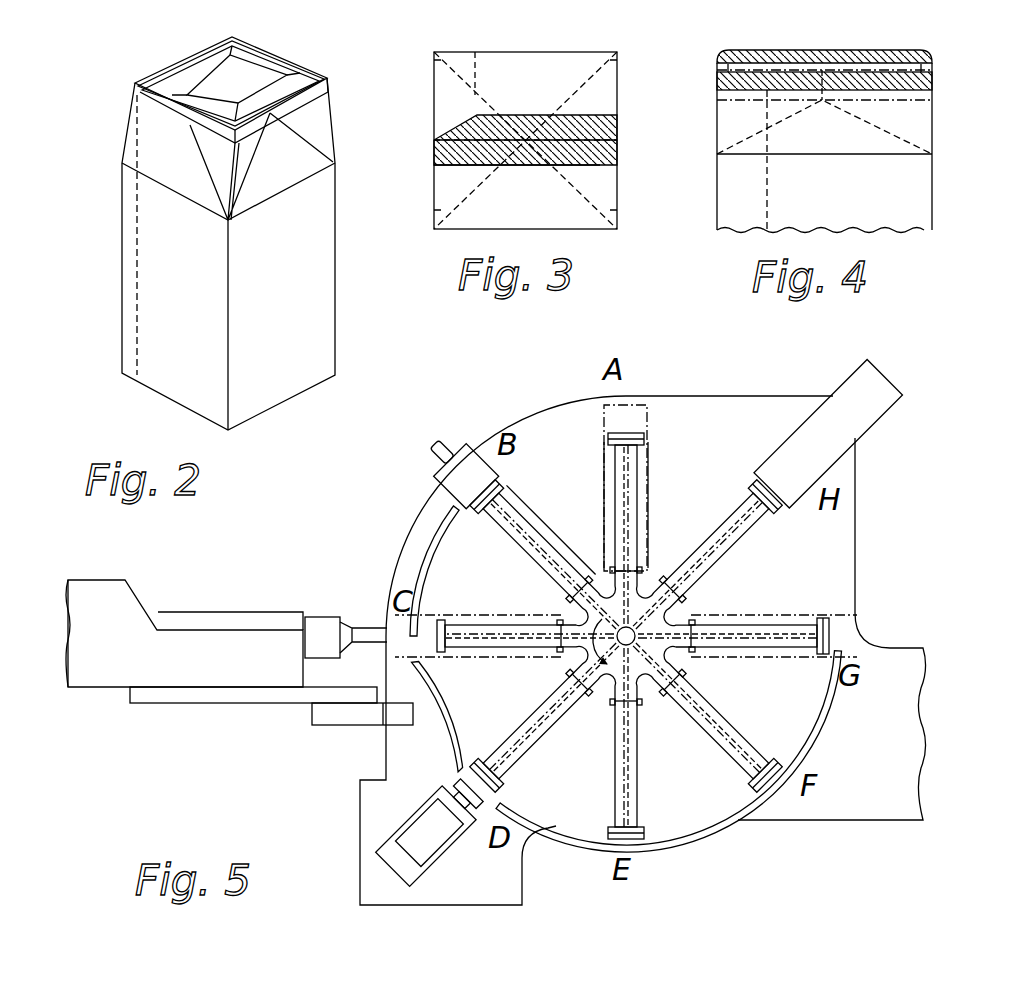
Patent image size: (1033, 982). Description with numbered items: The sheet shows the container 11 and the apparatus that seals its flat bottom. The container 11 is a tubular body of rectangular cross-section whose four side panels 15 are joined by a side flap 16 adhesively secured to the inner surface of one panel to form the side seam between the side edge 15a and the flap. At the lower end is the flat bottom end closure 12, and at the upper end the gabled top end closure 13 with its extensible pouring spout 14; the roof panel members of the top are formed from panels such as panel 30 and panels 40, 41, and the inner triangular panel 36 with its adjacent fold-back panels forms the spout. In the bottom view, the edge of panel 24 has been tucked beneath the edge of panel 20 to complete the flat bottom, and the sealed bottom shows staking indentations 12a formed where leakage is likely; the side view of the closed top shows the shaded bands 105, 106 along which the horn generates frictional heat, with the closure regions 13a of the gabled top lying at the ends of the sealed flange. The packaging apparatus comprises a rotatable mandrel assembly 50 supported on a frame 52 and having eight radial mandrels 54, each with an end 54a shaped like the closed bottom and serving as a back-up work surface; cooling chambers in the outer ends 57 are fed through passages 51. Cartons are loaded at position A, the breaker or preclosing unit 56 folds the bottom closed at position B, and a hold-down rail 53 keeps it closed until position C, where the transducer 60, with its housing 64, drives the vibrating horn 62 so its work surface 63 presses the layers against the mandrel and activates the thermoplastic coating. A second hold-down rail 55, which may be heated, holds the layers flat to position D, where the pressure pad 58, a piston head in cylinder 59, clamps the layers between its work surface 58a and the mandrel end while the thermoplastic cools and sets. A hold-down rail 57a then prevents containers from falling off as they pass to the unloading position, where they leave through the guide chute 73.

In FIG. 2, the container 11 is at (120, 340).
In FIG. 3, the container 11 is at (623, 78).
In FIG. 5, the container 11 is at (648, 470).
In FIG. 2, the bottom end closure 12 is at (130, 380).
In FIG. 3, the bottom end closure 12 is at (574, 62).
In FIG. 5, the bottom end closure 12 is at (603, 409).
In FIG. 3, the indentations 12a is at (476, 95).
In FIG. 2, the top end closure 13 is at (180, 62).
In FIG. 4, the top end closure 13 is at (826, 50).
In FIG. 5, the top end closure 13 is at (645, 562).
In FIG. 4, the top closure flange 13a is at (762, 78).
In FIG. 2, the extensible pouring spout 14 is at (333, 112).
In FIG. 2, the side panels 15 is at (170, 297).
In FIG. 2, the side edge 15a is at (122, 207).
In FIG. 2, the side flap 16 is at (137, 255).
In FIG. 3, the side flap 16 is at (480, 60).
In FIG. 4, the side flap 16 is at (767, 200).
In FIG. 3, the panel 20 is at (525, 115).
In FIG. 3, the panel 24 is at (530, 165).
In FIG. 4, the panel 30 is at (825, 145).
In FIG. 2, the inner triangular panel 36 is at (295, 168).
In FIG. 2, the panel 40 is at (222, 180).
In FIG. 2, the panel 41 is at (180, 170).
In FIG. 5, the rotatable mandrel assembly 50 is at (537, 400).
In FIG. 5, the passages 51 is at (520, 525).
In FIG. 5, the frame 52 is at (765, 393).
In FIG. 5, the hold-down rail 53 is at (418, 525).
In FIG. 5, the mandrel 54 is at (614, 492).
In FIG. 5, the mandrel end 54a is at (642, 432).
In FIG. 5, the second hold-down rail 55 is at (438, 665).
In FIG. 5, the breaker or preclosing unit 56 is at (466, 445).
In FIG. 5, the hold-down rail / mandrel outer ends 57 is at (610, 442).
In FIG. 5, the hold-down rail 57a is at (690, 845).
In FIG. 5, the pressure pad 58 is at (458, 790).
In FIG. 5, the work surface 58a is at (497, 800).
In FIG. 5, the cylinder 59 is at (380, 845).
In FIG. 5, the transducer 60 is at (265, 612).
In FIG. 5, the vibrating horn 62 is at (396, 643).
In FIG. 5, the work surface 63 is at (437, 620).
In FIG. 5, the housing 64 is at (326, 616).
In FIG. 5, the guide chute 73 is at (870, 427).
In FIG. 4, the band 105 is at (890, 52).
In FIG. 4, the band 106 is at (730, 80).